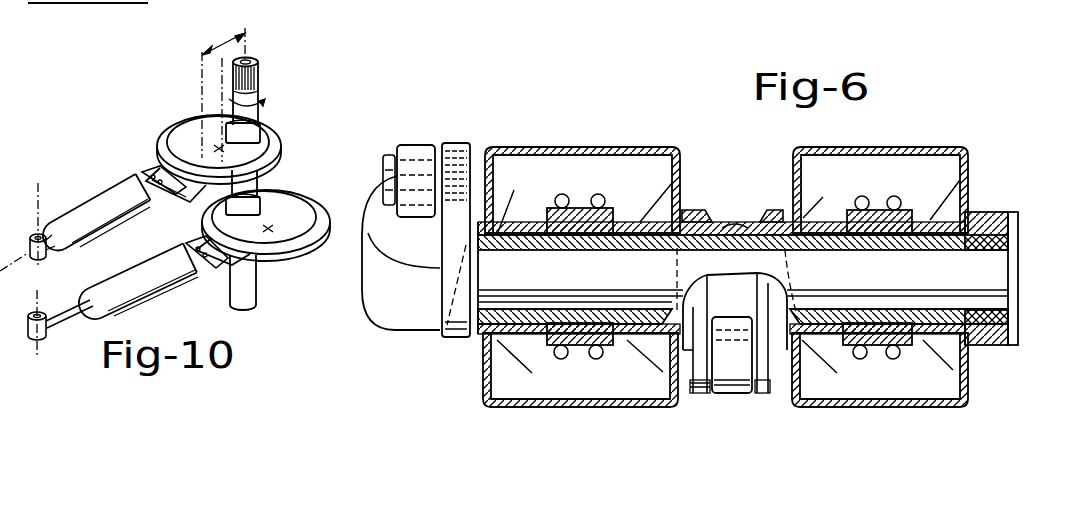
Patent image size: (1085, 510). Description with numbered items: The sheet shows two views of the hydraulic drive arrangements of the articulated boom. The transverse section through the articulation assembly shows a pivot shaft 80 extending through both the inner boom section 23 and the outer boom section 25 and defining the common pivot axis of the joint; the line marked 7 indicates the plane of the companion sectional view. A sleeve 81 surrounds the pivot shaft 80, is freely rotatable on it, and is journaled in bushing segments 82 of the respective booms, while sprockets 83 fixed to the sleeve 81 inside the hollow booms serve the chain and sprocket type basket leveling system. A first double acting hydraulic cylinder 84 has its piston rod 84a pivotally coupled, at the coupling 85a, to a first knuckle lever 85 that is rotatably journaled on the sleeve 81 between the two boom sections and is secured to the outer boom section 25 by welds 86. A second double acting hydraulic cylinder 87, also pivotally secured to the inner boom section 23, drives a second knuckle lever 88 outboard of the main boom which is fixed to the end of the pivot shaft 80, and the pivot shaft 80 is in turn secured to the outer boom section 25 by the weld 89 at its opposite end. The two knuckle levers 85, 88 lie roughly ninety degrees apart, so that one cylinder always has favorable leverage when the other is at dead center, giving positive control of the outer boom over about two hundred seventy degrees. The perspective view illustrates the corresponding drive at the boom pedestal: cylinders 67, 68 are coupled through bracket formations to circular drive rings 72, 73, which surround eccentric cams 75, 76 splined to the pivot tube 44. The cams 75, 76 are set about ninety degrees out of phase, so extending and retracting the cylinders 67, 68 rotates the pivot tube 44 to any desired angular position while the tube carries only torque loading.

In FIG. 10, the pivot tube 44 is at (252, 93).
In FIG. 10, the eccentric cam 75 is at (190, 126).
In FIG. 10, the circular drive ring 72 is at (274, 138).
In FIG. 10, the cylinder 67 is at (92, 190).
In FIG. 10, the circular drive ring 73 is at (314, 206).
In FIG. 10, the eccentric cam 76 is at (296, 246).
In FIG. 10, the cylinder 68 is at (158, 292).
In FIG. 6, the section line 7- 7 is at (392, 138).
In FIG. 6, the inner boom section 23 is at (572, 147).
In FIG. 6, the outer boom section 25 is at (888, 147).
In FIG. 6, the pivot shaft 80 is at (995, 273).
In FIG. 6, the sleeve 81 is at (982, 212).
In FIG. 6, the bushing segments 82 is at (514, 204).
In FIG. 6, the sprockets 83 is at (578, 200).
In FIG. 6, the welds 86 is at (786, 210).
In FIG. 6, the second double acting hydraulic cylinder 87 is at (392, 318).
In FIG. 6, the second knuckle lever 88 is at (456, 338).
In FIG. 6, the weld 89 is at (968, 347).
In FIG. 6, the first double acting hydraulic cylinder 84 is at (790, 360).
In FIG. 6, the piston rod 84a is at (730, 395).
In FIG. 6, the first knuckle lever 85 is at (698, 395).
In FIG. 6, the pivotal coupling 85a is at (688, 385).